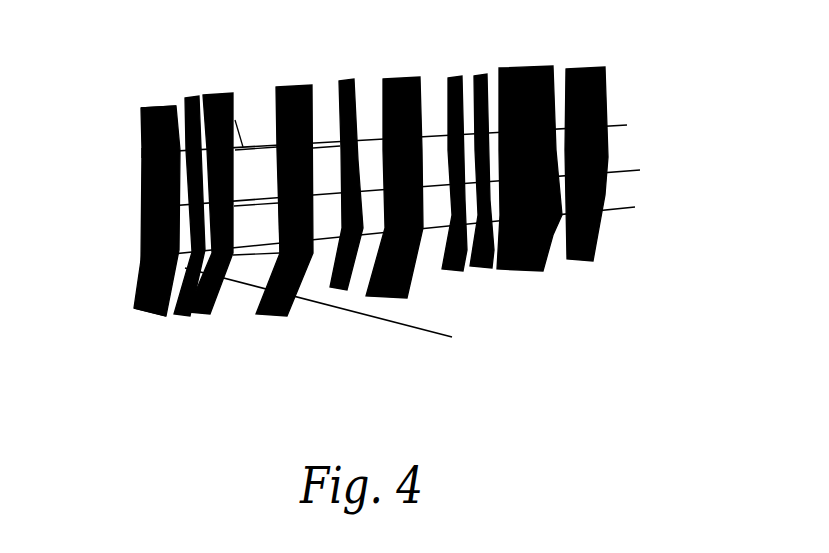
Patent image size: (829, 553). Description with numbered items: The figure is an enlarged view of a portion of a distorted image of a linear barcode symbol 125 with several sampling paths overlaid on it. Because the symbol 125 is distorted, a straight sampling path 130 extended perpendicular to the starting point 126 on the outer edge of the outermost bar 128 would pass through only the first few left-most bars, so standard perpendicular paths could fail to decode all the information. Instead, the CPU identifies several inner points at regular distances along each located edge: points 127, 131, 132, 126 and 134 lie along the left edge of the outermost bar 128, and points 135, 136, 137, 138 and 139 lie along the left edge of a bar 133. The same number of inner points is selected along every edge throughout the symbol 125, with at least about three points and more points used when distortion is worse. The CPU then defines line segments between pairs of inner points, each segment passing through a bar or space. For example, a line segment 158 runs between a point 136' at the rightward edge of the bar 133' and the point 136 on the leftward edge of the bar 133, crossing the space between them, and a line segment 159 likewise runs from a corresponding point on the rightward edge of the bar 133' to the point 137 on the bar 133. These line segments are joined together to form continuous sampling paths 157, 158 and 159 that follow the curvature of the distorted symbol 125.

The symbol 125 is at (115, 365).
The starting point 126 is at (143, 260).
The inner point 127 is at (140, 110).
The outermost bar 128 is at (152, 104).
The sampling path 130 is at (405, 330).
The inner point 131 is at (142, 153).
The inner point 132 is at (143, 208).
The bar 133 is at (302, 177).
The bar 133' is at (166, 241).
The inner point 134 is at (133, 304).
The inner point 135 is at (266, 147).
The inner point 136 is at (259, 102).
The point 136' is at (292, 77).
The inner point 137 is at (275, 198).
The inner point 138 is at (249, 207).
The inner point 139 is at (257, 253).
The sampling path 157 is at (627, 125).
The line segment 158 is at (640, 170).
The line segment 159 is at (635, 207).